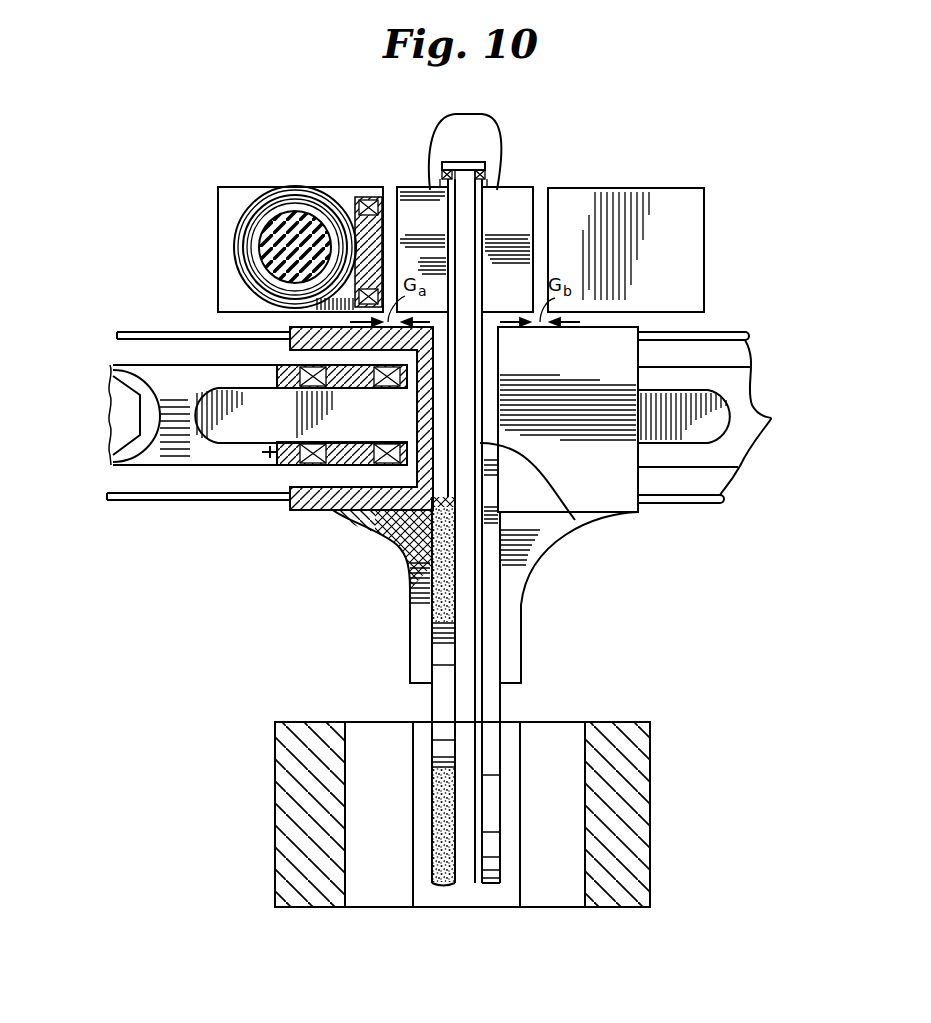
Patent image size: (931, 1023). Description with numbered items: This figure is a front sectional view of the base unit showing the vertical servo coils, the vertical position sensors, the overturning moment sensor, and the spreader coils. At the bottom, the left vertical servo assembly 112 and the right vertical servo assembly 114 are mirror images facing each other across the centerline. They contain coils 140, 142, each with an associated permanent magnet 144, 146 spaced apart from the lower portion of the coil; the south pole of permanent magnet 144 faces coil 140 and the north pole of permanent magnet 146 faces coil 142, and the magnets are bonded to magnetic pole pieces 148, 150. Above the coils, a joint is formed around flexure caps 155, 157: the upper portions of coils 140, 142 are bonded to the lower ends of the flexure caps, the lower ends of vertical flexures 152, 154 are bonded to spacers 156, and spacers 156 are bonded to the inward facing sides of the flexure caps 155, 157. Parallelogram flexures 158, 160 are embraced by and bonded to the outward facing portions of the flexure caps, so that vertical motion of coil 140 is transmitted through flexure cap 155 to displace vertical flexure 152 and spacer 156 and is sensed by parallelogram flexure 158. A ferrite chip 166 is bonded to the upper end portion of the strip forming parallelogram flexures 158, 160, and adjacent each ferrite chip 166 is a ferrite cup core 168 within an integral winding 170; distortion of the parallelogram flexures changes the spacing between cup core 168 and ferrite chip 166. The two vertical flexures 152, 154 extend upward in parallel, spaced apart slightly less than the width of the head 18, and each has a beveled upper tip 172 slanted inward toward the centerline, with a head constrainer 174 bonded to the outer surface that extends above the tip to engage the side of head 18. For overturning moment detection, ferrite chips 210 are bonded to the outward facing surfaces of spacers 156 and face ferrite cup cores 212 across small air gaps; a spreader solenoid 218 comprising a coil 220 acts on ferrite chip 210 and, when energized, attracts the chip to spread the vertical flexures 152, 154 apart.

The head 18 is at (477, 163).
The head constrainer 174 is at (432, 124).
The upper tip 172 is at (419, 197).
The ferrite chip 210 is at (405, 190).
The ferrite cup core 212 is at (358, 205).
The spreader solenoid 218 is at (264, 212).
The coil 220 is at (250, 250).
The parallelogram flexure 158 is at (117, 335).
The ferrite chip 166 is at (290, 347).
The ferrite cup core 168 is at (290, 378).
The integral winding 170 is at (278, 458).
The parallelogram flexure 160 is at (772, 419).
The vertical flexure 154 is at (578, 526).
The spacer 156 is at (378, 533).
The flexure cap 157 is at (528, 568).
The vertical flexure 152 is at (400, 554).
The flexure cap 155 is at (422, 642).
The coil 140 is at (408, 582).
The coil 142 is at (493, 885).
The left vertical servo assembly 112 is at (430, 705).
The right vertical servo assembly 114 is at (502, 705).
The magnetic pole piece 148 is at (323, 892).
The permanent magnet 144 is at (386, 892).
The permanent magnet 146 is at (572, 892).
The magnetic pole piece 150 is at (632, 890).